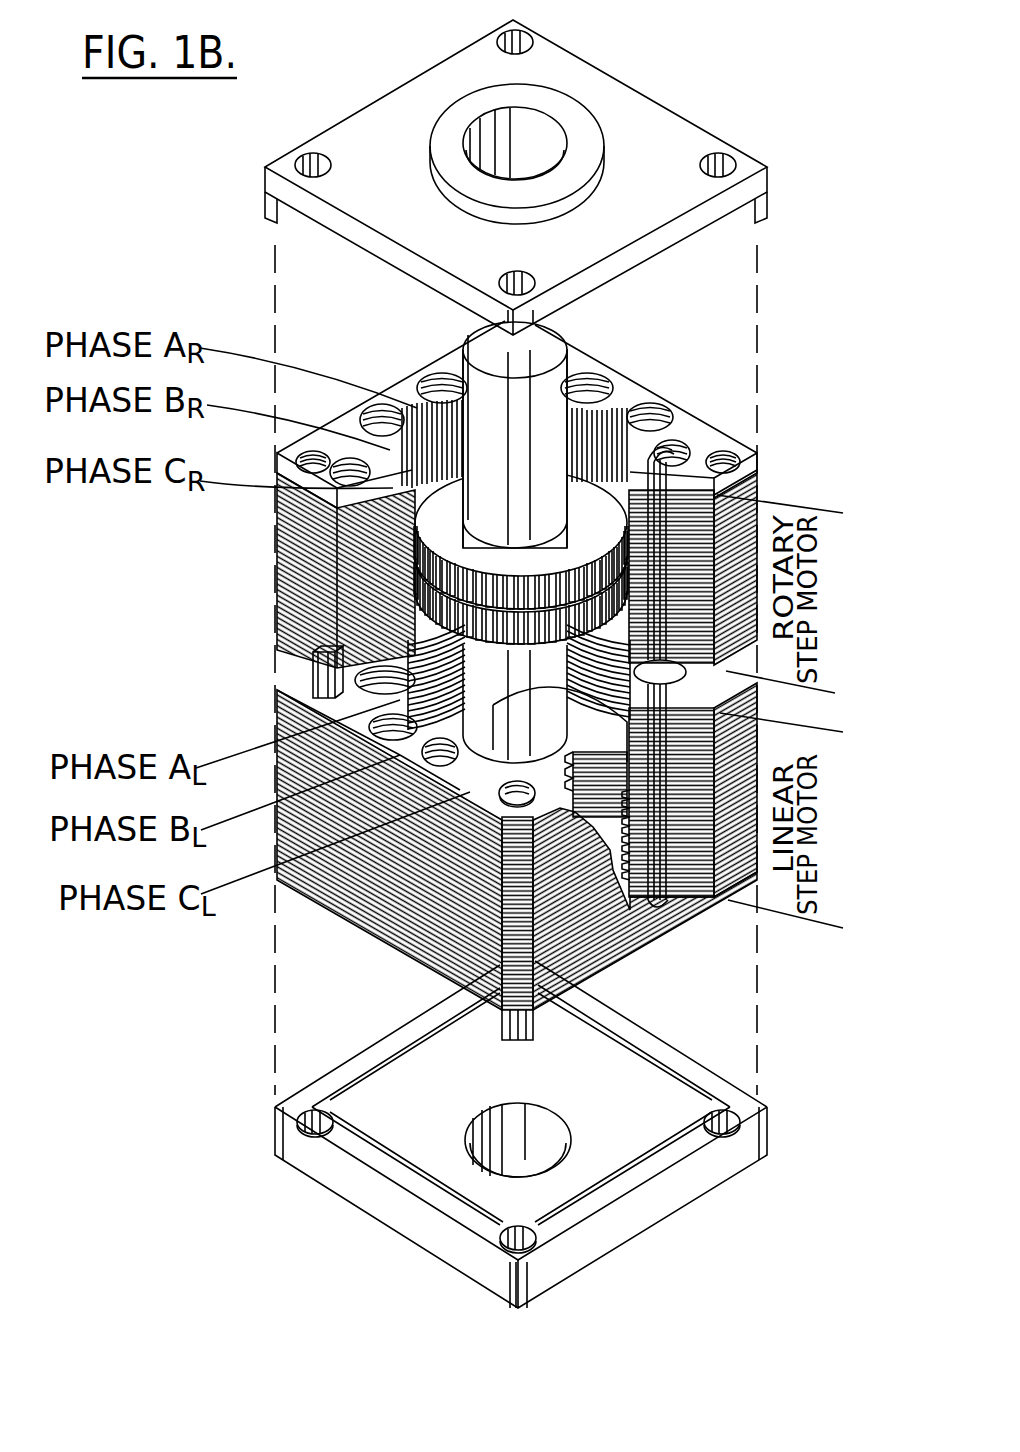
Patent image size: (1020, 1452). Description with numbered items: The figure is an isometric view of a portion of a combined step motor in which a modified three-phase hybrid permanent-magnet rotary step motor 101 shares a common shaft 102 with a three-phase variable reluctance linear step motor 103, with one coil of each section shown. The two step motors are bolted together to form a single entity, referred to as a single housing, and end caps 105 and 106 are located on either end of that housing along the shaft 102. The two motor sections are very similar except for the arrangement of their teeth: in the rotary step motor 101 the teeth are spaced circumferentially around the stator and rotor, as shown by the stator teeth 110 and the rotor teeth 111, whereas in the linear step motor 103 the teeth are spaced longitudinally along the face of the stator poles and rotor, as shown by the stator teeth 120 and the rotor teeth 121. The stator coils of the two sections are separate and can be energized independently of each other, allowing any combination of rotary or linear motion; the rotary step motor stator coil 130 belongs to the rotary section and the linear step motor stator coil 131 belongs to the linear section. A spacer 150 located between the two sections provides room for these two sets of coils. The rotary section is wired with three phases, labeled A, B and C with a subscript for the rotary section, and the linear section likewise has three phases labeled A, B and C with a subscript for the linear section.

The rotary step motor 101 is at (740, 437).
The common shaft 102 is at (545, 352).
The linear step motor 103 is at (345, 928).
The end cap 105 is at (633, 1235).
The end cap 106 is at (638, 88).
The stator teeth 110 is at (412, 408).
The rotor teeth 111 is at (415, 565).
The stator teeth 120 is at (400, 646).
The rotor teeth 121 is at (600, 812).
The rotary step motor stator coil 130 is at (677, 447).
The linear step motor stator coil 131 is at (650, 895).
The spacer 150 is at (293, 672).